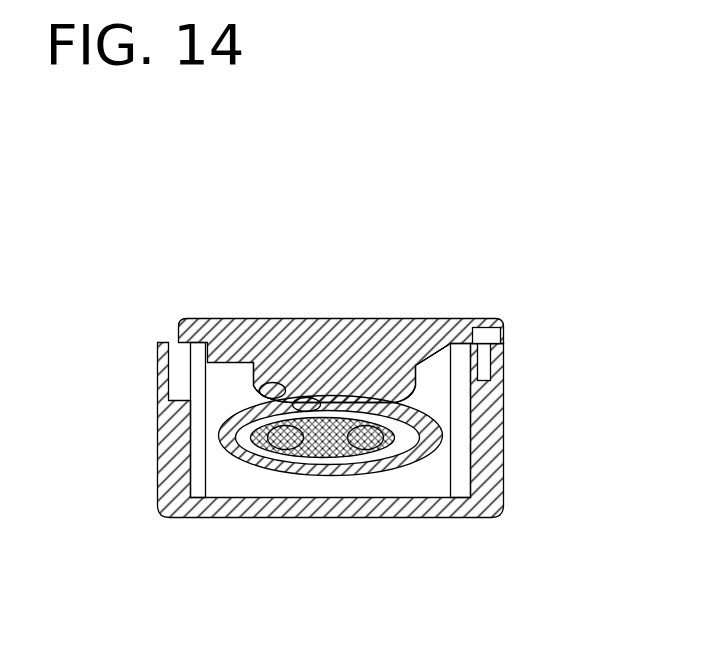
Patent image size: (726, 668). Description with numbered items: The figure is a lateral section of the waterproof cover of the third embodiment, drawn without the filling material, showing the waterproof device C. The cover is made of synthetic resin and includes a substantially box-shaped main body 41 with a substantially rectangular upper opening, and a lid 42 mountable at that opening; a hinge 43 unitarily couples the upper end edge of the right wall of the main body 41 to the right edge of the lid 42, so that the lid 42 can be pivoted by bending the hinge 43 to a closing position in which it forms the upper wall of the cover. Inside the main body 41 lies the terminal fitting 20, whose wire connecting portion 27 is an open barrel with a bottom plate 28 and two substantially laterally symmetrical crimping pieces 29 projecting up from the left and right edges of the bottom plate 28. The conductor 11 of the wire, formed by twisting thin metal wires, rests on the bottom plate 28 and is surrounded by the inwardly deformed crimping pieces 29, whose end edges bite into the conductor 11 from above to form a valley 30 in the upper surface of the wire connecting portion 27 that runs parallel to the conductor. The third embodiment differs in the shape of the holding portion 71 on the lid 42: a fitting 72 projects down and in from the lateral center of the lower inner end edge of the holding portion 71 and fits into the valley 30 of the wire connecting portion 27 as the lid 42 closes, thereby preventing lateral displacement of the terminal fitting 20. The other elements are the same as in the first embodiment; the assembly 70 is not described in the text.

The waterproof device C is at (505, 218).
The housing 70 is at (543, 286).
The main body 41 is at (440, 505).
The lid 42 is at (226, 336).
The hinge 43 is at (488, 332).
The valley 30 is at (348, 400).
The terminal fitting 20 is at (432, 392).
The conductor 11 is at (280, 451).
The wire connecting portion 27 is at (395, 584).
The bottom plate 28 is at (318, 458).
The crimping pieces 29 is at (284, 442).
The holding portion 71 is at (270, 382).
The fitting 72 is at (304, 400).